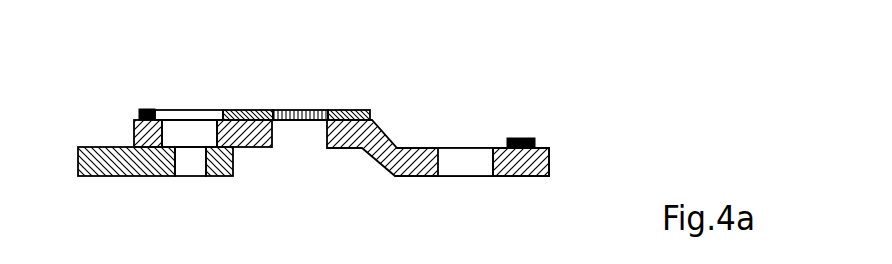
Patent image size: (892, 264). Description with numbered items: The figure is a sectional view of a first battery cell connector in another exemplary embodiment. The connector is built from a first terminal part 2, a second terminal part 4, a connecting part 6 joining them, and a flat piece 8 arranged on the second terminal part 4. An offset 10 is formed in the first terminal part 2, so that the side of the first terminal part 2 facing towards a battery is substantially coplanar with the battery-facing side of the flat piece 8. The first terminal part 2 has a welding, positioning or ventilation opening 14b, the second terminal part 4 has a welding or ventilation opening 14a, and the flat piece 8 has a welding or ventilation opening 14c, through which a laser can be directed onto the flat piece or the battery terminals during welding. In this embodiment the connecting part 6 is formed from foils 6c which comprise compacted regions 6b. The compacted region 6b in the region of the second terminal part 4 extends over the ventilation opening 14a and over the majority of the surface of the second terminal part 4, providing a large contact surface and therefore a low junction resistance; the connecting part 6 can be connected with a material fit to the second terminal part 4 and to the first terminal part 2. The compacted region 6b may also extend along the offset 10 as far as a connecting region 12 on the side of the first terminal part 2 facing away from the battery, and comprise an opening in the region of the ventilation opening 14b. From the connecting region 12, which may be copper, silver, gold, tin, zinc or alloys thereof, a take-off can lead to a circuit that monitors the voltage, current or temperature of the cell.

The first terminal part 2 is at (537, 173).
The second terminal part 4 is at (134, 134).
The connecting part 6 is at (242, 110).
The compacted region 6b is at (327, 148).
The foils 6c is at (302, 110).
The flat piece 8 is at (112, 175).
The offset 10 is at (373, 132).
The connecting region 12 is at (520, 138).
The ventilation opening 14a is at (193, 128).
The ventilation opening 14b is at (458, 163).
The ventilation opening 14c is at (195, 168).